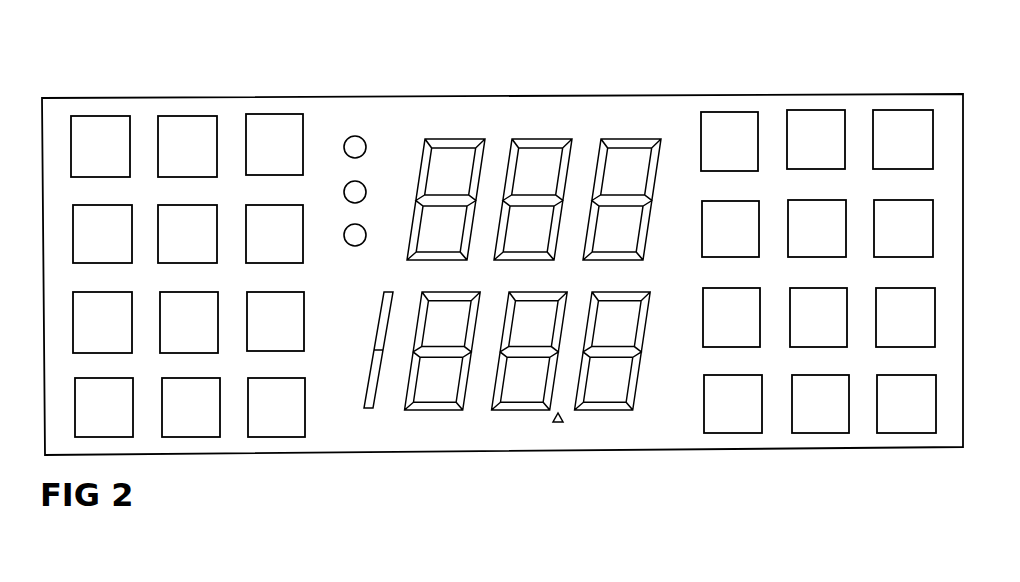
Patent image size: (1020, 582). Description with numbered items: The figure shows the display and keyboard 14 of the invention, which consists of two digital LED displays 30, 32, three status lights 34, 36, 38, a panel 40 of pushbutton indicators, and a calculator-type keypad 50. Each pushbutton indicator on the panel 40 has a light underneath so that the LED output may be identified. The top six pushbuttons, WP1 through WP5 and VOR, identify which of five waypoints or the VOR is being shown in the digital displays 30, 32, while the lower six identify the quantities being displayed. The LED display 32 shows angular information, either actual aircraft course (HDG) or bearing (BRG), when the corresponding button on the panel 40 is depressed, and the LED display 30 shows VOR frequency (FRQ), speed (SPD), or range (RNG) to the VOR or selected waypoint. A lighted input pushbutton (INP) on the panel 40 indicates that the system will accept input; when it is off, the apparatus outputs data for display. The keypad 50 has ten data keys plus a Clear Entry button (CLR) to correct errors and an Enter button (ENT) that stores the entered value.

The display and keyboard 14 is at (299, 470).
The digital LED display 30 is at (524, 419).
The digital LED display 32 is at (550, 124).
The status light 34 is at (364, 139).
The status light 36 is at (365, 186).
The status light 38 is at (365, 229).
The panel of pushbutton indicators 40 is at (198, 97).
The calculator-type keypad 50 is at (799, 90).